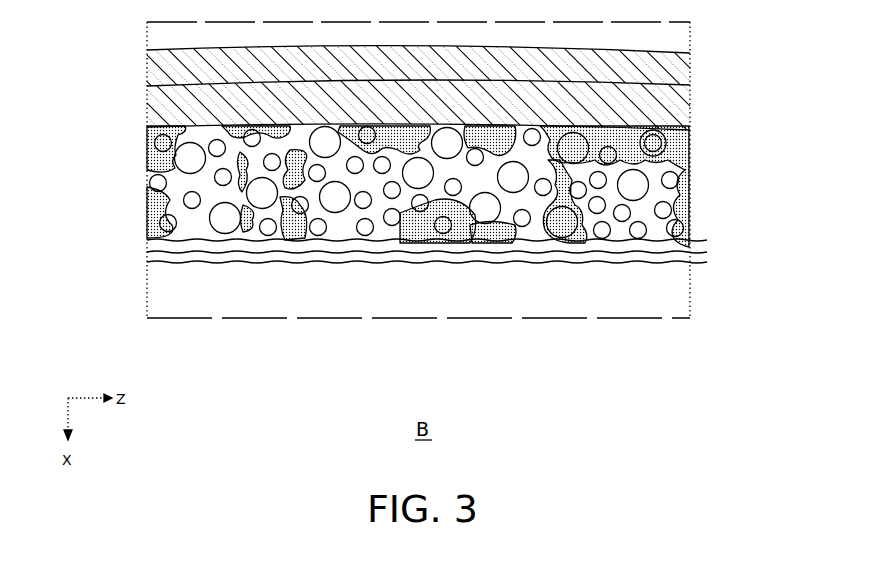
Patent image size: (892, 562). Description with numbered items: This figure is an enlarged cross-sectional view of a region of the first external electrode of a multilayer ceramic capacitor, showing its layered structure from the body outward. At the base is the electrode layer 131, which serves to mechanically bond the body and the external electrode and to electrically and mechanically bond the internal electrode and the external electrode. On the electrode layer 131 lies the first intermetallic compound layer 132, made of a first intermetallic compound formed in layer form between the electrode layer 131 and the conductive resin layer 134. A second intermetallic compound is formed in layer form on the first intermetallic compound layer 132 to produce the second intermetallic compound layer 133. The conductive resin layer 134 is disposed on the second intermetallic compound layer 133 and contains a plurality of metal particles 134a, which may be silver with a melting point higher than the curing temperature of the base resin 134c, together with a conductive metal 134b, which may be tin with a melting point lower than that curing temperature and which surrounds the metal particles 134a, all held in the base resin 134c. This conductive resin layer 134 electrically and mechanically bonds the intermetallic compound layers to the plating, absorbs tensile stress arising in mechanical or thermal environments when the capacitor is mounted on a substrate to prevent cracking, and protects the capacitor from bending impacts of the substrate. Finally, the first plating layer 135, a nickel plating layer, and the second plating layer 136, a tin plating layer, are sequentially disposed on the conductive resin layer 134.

The electrode layer 131 is at (685, 297).
The first intermetallic compound layer 132 is at (693, 255).
The second intermetallic compound layer 133 is at (690, 242).
The conductive resin layer 134 is at (502, 179).
The metal particles 134a is at (688, 143).
The conductive metal 134b is at (692, 168).
The base resin 134c is at (694, 198).
The first plating layer 135 is at (680, 105).
The second plating layer 136 is at (680, 65).